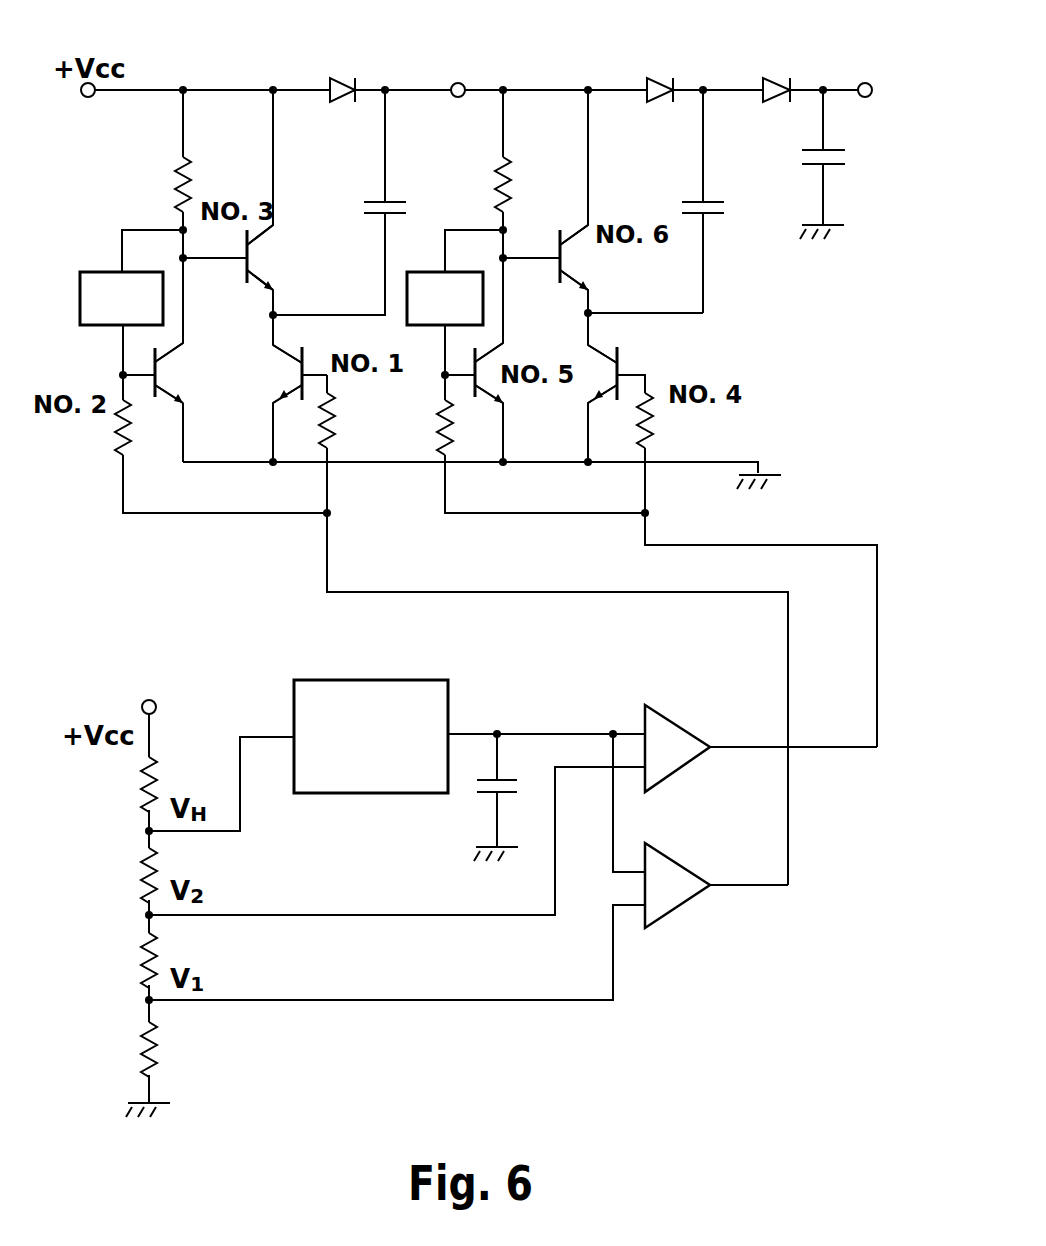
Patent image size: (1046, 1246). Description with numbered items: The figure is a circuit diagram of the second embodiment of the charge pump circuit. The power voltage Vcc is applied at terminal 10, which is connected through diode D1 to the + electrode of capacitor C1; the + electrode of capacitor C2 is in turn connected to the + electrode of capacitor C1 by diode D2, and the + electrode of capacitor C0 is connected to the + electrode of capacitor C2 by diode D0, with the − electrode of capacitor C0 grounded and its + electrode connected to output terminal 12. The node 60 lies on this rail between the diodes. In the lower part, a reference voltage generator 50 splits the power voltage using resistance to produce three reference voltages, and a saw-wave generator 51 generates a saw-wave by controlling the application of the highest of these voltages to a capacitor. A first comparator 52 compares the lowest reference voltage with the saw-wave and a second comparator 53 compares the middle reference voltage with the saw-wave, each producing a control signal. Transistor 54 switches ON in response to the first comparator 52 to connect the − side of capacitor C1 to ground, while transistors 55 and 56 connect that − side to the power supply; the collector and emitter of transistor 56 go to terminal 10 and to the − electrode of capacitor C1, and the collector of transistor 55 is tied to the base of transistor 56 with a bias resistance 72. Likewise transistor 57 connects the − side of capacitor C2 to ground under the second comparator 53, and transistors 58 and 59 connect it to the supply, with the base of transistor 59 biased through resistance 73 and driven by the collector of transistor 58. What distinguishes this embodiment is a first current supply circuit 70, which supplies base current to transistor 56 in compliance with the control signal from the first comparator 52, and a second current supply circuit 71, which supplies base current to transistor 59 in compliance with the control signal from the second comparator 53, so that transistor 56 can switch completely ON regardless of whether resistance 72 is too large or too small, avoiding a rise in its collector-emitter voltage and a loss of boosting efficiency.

The terminal 10 is at (86, 98).
The output terminal 12 is at (867, 98).
The reference voltage generator 50 is at (222, 888).
The saw-wave generator 51 is at (375, 680).
The first comparator 52 is at (692, 873).
The second comparator 53 is at (690, 765).
The transistor 54 is at (280, 355).
The transistor 55 is at (155, 402).
The transistor 56 is at (250, 268).
The transistor 57 is at (620, 360).
The transistor 58 is at (478, 395).
The transistor 59 is at (560, 245).
The intermediate node 60 is at (460, 82).
The first current supply circuit 70 is at (104, 270).
The second current supply circuit 71 is at (435, 270).
The resistance 72 is at (177, 195).
The resistor 73 is at (497, 195).
The capacitor C1 is at (363, 218).
The capacitor C2 is at (705, 245).
The capacitor C0 is at (800, 162).
The diode D1 is at (340, 82).
The diode D2 is at (652, 80).
The diode D0 is at (772, 80).